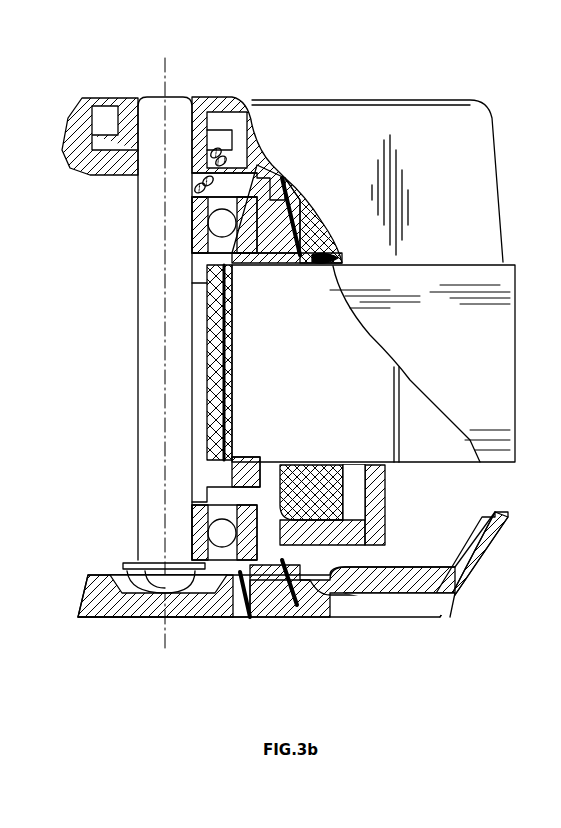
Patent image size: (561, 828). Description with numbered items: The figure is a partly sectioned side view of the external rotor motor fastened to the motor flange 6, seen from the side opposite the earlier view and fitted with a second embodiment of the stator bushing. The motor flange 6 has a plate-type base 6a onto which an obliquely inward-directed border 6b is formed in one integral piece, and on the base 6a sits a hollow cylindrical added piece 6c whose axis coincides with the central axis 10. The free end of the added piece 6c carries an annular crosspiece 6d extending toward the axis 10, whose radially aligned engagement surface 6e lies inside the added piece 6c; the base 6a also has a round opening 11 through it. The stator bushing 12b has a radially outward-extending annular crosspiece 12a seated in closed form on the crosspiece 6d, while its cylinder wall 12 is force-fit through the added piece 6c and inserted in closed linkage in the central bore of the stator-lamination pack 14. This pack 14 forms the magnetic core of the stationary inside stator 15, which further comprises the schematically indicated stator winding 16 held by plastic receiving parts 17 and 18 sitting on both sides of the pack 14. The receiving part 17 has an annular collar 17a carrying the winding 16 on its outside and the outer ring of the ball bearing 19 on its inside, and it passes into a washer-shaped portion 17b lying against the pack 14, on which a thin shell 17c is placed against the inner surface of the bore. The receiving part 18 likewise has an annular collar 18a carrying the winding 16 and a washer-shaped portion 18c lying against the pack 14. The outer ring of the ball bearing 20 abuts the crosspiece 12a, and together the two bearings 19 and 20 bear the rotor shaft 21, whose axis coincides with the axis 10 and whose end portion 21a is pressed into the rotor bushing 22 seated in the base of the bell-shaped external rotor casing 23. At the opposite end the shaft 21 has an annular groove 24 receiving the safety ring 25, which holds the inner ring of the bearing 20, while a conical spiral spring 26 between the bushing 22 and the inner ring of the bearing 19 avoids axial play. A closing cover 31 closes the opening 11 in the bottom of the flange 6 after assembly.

The motor flange 6 is at (320, 612).
The plate-type base 6a is at (360, 603).
The obliquely inward-directed border 6b is at (465, 579).
The hollow cylindrical added piece 6c is at (236, 612).
The annular crosspiece 6d is at (245, 463).
The engagement surface 6e is at (238, 617).
The central axis 10 is at (165, 78).
The opening 11 is at (232, 282).
The cylinder wall of the stator bushing 12 is at (230, 320).
The annular crosspiece of the stator bushing 12a is at (205, 501).
The stator bushing 12b is at (212, 375).
The stator-lamination pack 14 is at (345, 356).
The inside stator 15 is at (378, 412).
The stator winding 16 is at (355, 535).
The receiving part 17 is at (302, 246).
The annular collar 17a is at (300, 214).
The washer-shaped portion 17b is at (334, 254).
The shell 17c is at (230, 388).
The receiving part 18 is at (285, 520).
The annular collar 18a is at (273, 478).
The washer-shaped portion 18c is at (322, 462).
The ball bearing 19 is at (276, 190).
The ball bearing 20 is at (200, 538).
The rotor shaft 21 is at (140, 311).
The shaft end 21a is at (172, 590).
The rotor bushing 22 is at (205, 100).
The external rotor casing 23 is at (483, 380).
The annular groove 24 is at (148, 578).
The safety ring 25 is at (140, 617).
The conical spiral spring 26 is at (228, 176).
The closing cover 31 is at (280, 612).